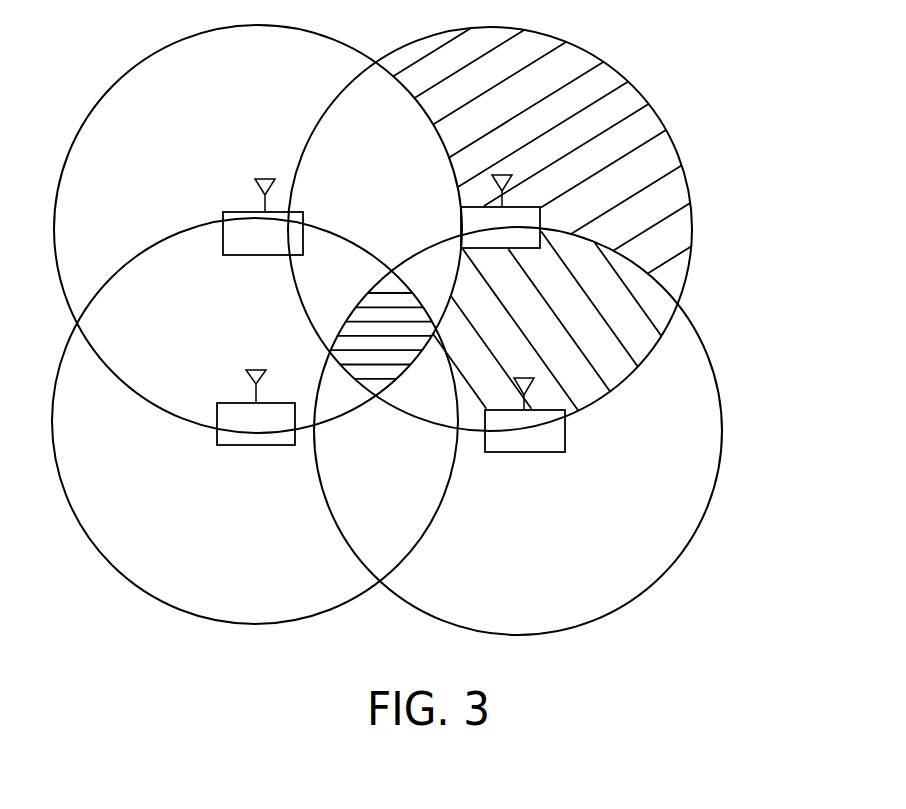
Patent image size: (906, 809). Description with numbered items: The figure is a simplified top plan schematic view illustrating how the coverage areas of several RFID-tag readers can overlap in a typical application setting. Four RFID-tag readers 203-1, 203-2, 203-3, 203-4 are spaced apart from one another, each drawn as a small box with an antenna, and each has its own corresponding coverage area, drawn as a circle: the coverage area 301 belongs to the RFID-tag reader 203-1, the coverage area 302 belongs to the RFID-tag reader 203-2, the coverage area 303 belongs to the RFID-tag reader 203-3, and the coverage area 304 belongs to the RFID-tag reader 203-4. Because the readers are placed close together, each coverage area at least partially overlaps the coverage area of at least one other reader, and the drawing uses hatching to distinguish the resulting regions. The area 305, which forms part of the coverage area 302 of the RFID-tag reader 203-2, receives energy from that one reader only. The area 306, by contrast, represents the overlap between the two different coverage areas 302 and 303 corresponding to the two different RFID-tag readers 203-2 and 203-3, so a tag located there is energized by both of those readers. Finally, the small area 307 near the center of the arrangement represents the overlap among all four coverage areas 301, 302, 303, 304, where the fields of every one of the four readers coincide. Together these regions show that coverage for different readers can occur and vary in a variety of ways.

The coverage area 301 is at (116, 98).
The coverage area 302 is at (607, 83).
The coverage area 303 is at (693, 380).
The coverage area 304 is at (300, 598).
The single-reader coverage area 305 is at (657, 158).
The two-reader overlap area 306 is at (617, 305).
The four-reader overlap area 307 is at (372, 342).
The RFID-tag reader 203-1 is at (236, 236).
The RFID-tag reader 203-2 is at (473, 220).
The RFID-tag reader 203-3 is at (533, 445).
The RFID-tag reader 203-4 is at (250, 440).